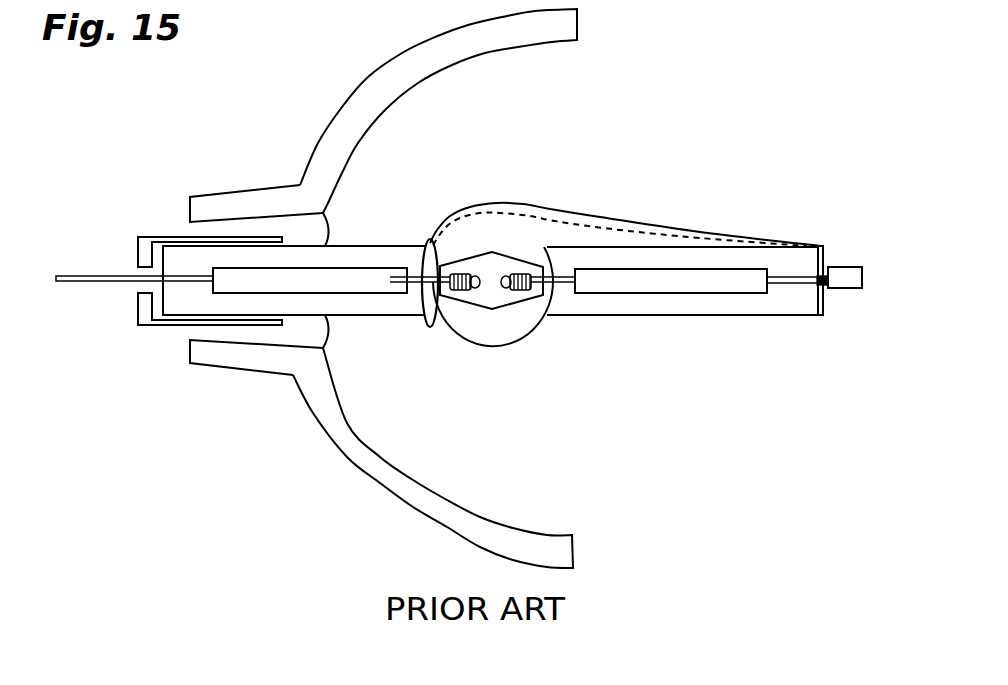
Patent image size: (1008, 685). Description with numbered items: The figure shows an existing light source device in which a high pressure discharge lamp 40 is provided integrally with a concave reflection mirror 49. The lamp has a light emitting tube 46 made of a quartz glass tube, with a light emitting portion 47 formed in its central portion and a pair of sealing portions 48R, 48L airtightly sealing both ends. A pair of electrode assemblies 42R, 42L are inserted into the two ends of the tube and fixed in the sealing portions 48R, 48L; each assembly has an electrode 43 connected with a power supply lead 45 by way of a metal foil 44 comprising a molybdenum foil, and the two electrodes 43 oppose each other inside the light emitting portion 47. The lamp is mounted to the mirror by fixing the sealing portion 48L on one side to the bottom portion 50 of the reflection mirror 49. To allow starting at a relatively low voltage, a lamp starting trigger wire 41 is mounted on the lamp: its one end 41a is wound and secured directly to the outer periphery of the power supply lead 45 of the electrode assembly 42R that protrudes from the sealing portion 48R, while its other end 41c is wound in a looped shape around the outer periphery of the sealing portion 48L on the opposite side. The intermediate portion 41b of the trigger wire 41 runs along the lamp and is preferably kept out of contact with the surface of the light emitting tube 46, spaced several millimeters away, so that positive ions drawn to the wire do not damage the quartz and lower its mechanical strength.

The high pressure discharge lamp 40 is at (704, 193).
The lamp starting trigger wire 41 is at (626, 220).
The one end of the trigger wire 41a is at (826, 270).
The intermediate portion of the trigger wire 41b is at (543, 202).
The other end of the trigger wire 41c is at (423, 252).
The electrode assembly 42L is at (370, 528).
The electrode assembly 42R is at (532, 487).
The electrode 43 is at (460, 292).
The metal foil 44 is at (327, 288).
The power supply lead 45 is at (178, 281).
The light emitting tube 46 is at (559, 241).
The light emitting portion 47 is at (493, 342).
The sealing portion 48L is at (220, 255).
The sealing portion 48R is at (730, 255).
The concave reflection mirror 49 is at (378, 61).
The bottom portion of the reflection mirror 50 is at (287, 222).